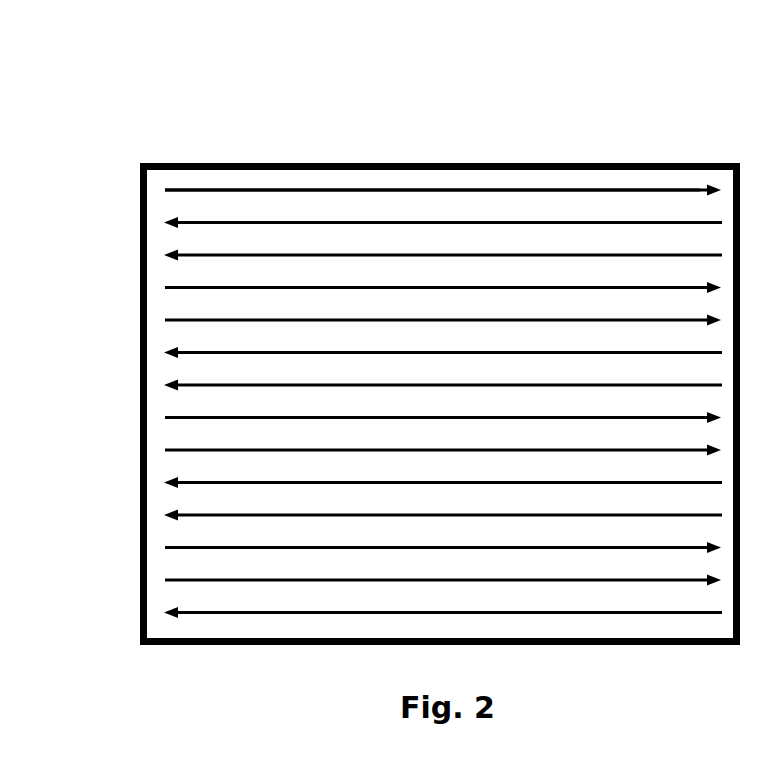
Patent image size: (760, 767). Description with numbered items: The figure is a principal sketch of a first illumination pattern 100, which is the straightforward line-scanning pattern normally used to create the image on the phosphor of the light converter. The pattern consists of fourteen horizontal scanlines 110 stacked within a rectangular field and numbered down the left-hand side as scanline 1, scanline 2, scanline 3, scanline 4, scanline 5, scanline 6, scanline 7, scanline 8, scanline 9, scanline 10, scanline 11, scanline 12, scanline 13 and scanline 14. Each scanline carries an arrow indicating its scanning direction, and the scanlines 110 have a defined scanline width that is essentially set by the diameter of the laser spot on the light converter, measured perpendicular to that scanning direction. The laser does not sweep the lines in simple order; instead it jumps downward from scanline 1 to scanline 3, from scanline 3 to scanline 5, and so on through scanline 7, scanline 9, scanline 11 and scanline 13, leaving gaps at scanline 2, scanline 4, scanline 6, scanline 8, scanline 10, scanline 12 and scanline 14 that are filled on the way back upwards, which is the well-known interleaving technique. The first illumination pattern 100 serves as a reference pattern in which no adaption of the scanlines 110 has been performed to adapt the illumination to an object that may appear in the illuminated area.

The first illumination pattern 100 is at (128, 130).
The scanlines 110 is at (660, 189).
The scanline one 1 is at (401, 190).
The scanline two 2 is at (412, 223).
The scanline three 3 is at (412, 255).
The scanline four 4 is at (412, 288).
The scanline five 5 is at (412, 320).
The scanline six 6 is at (412, 353).
The scanline seven 7 is at (412, 385).
The scanline eight 8 is at (412, 418).
The scanline nine 9 is at (412, 450).
The scanline ten 10 is at (412, 483).
The scanline eleven 11 is at (412, 515).
The scanline twelve 12 is at (412, 548).
The scanline thirteen 13 is at (412, 580).
The scanline fourteen 14 is at (412, 613).